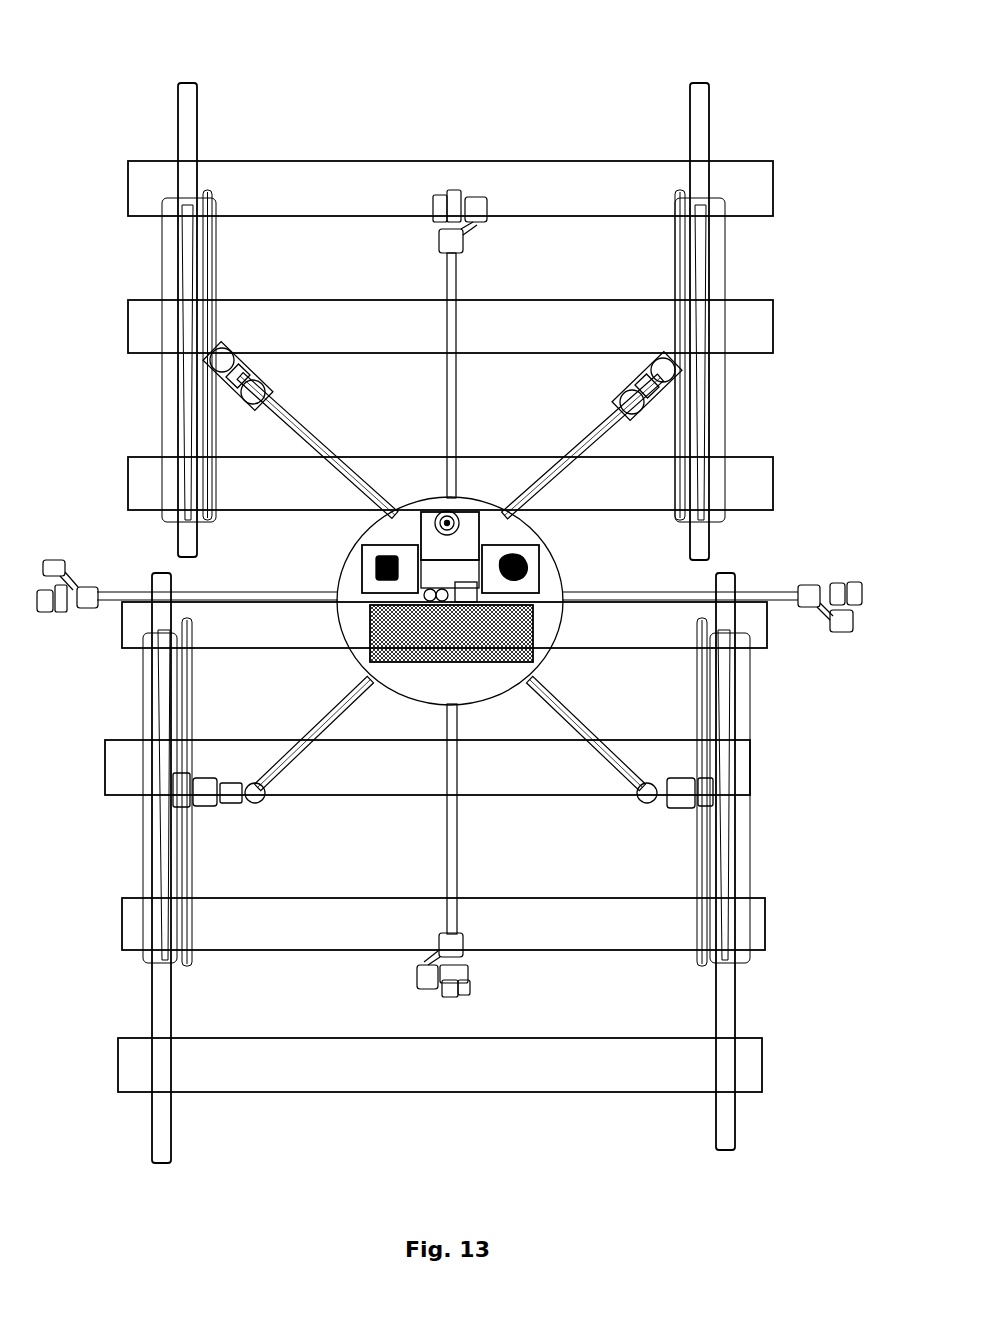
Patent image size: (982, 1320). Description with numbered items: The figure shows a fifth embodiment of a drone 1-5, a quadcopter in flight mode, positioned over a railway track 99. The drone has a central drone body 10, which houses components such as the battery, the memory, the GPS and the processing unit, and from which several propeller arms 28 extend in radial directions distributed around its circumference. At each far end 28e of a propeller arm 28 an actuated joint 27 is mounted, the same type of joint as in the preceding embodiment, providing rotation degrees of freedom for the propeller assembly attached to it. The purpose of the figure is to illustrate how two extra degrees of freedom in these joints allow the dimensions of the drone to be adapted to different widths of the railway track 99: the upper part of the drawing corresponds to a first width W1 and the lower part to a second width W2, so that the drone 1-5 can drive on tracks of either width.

The drone 1-5 is at (120, 80).
The railway track 99 is at (703, 127).
The drone body 10 is at (460, 693).
The actuated joint 27 is at (250, 366).
The propeller arm 28 is at (337, 477).
The far end of propeller arm 28e is at (253, 357).
The width of railway track W1 is at (690, 146).
The width of railway track W2 is at (717, 1065).